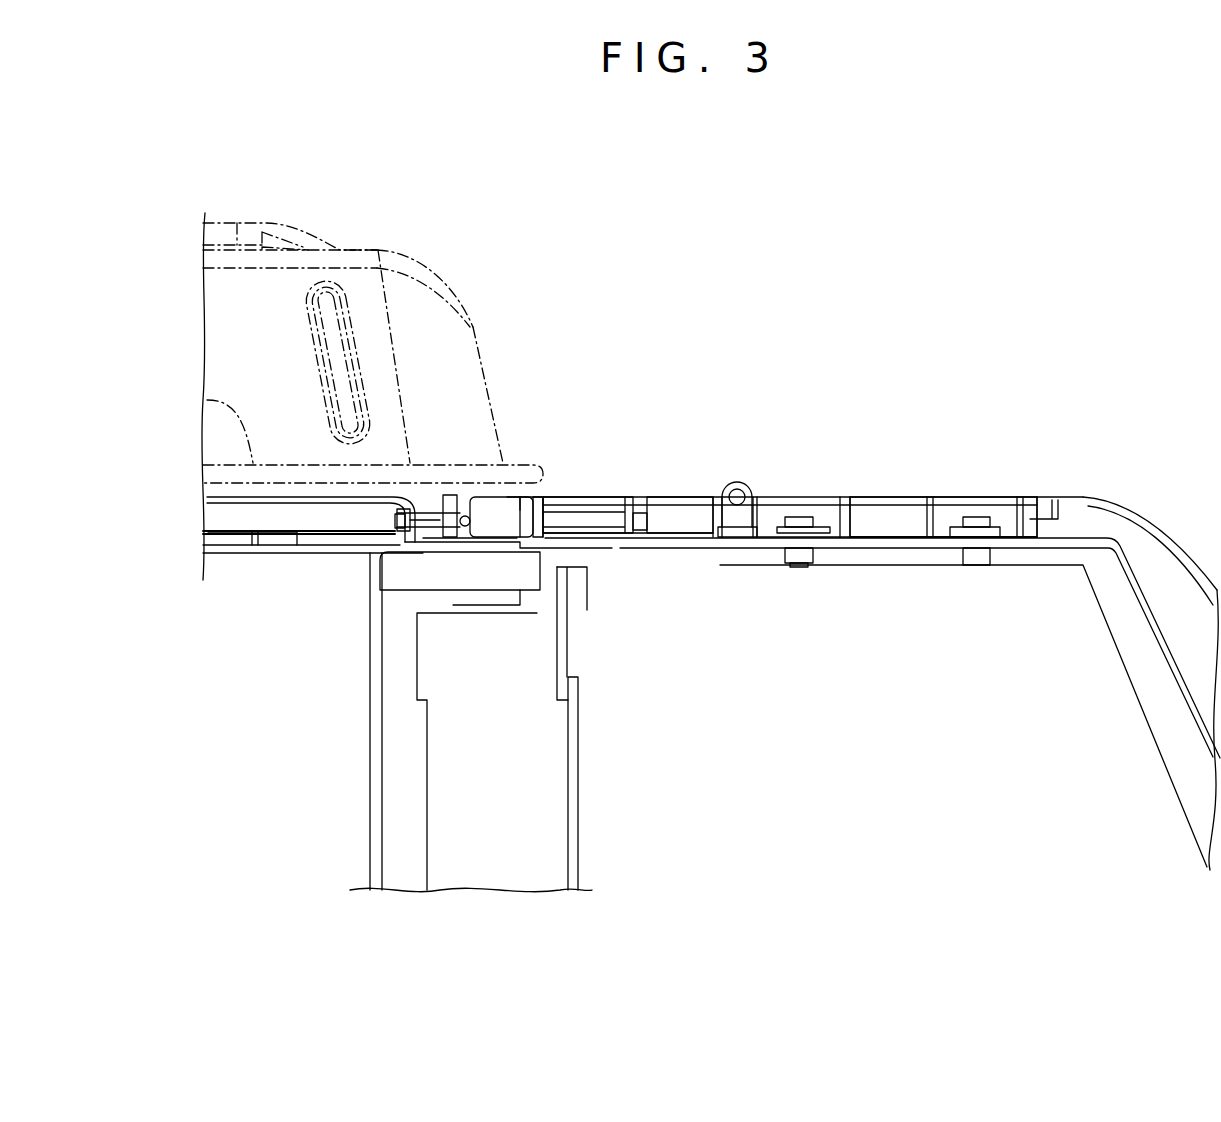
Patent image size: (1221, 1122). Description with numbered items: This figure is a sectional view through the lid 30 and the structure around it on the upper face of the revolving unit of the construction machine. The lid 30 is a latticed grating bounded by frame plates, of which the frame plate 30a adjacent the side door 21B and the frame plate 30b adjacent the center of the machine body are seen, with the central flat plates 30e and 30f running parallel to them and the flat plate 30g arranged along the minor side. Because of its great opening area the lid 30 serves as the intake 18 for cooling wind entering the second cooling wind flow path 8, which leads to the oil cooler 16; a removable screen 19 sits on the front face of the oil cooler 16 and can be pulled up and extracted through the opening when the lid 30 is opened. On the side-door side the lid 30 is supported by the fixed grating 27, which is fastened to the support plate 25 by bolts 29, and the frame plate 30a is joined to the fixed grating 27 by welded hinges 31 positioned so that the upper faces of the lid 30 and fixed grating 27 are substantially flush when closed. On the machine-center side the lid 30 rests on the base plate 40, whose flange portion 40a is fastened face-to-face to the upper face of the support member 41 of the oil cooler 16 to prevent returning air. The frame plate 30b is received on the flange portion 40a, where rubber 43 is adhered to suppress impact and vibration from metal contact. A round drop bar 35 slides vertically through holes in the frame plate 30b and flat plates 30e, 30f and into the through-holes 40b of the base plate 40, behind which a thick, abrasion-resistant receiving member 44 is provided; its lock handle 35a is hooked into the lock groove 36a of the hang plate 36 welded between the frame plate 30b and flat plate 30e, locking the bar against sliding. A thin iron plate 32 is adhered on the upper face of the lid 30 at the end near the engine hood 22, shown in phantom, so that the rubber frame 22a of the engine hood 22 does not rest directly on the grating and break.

The second cooling wind flow path 8 is at (738, 704).
The oil cooler 16 is at (427, 797).
The intake 18 is at (848, 437).
The removable screen 19 is at (580, 755).
The side door 21B is at (1163, 527).
The engine hood 22 is at (475, 325).
The rubber frame 22a is at (207, 400).
The support plate 25 is at (866, 537).
The fixed grating 27 is at (892, 497).
The bolts 29 is at (798, 517).
The lid 30 is at (645, 497).
The frame plate 30a is at (710, 547).
The frame plate 30b is at (425, 493).
The flat plate 30e is at (560, 542).
The flat plate 30f is at (640, 530).
The flat plate 30g is at (673, 500).
The hinges 31 is at (737, 480).
The thin iron plate 32 is at (562, 500).
The round drop bar 35 is at (603, 510).
The lock handle 35a is at (467, 497).
The hang plate 36 is at (518, 507).
The lock groove 36a is at (467, 500).
The base plate 40 is at (253, 495).
The flange portion 40a is at (440, 530).
The through-holes 40b is at (395, 512).
The support member 41 is at (370, 728).
The rubber 43 is at (500, 540).
The receiving member 44 is at (398, 521).